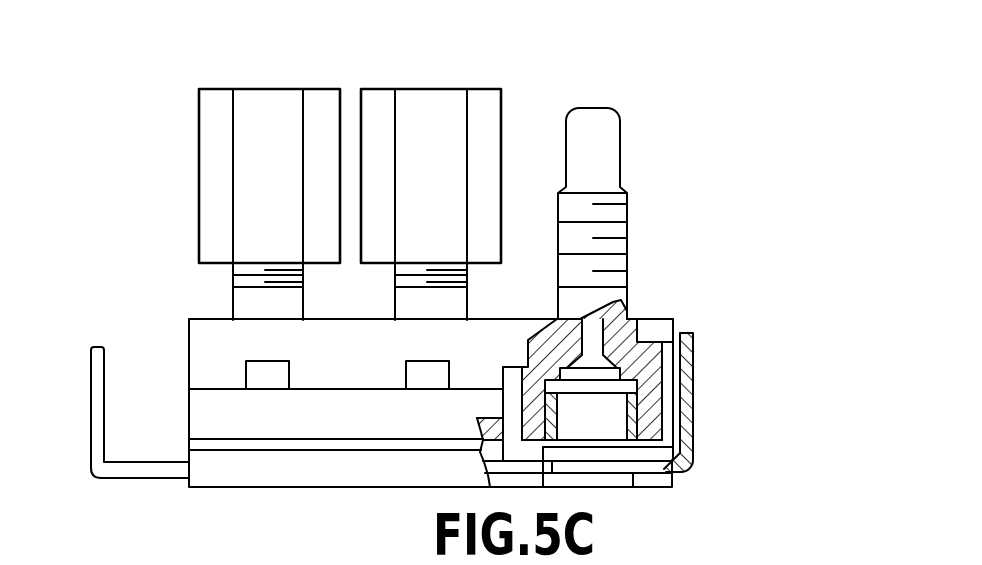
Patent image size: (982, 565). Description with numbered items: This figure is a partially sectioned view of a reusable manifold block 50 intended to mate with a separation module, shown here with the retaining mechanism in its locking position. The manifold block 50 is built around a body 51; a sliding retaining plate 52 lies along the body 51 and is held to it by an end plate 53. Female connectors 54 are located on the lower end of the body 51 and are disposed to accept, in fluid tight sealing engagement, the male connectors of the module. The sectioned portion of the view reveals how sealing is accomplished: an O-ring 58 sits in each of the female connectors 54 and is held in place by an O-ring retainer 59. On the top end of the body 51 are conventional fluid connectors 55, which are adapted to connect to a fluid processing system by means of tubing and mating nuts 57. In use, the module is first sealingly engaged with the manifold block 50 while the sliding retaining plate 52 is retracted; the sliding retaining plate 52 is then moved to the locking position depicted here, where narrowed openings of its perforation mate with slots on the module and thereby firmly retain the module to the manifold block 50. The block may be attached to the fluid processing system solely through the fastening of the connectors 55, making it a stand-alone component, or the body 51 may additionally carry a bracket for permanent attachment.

The reusable manifold block 50 is at (600, 35).
The body 51 is at (200, 319).
The sliding retaining plate 52 is at (90, 381).
The end plate 53 is at (667, 488).
The female connectors 54 is at (608, 421).
The conventional fluid connectors 55 is at (623, 151).
The mating nuts 57 is at (407, 88).
The O-rings 58 is at (680, 333).
The O-ring retainer 59 is at (662, 390).